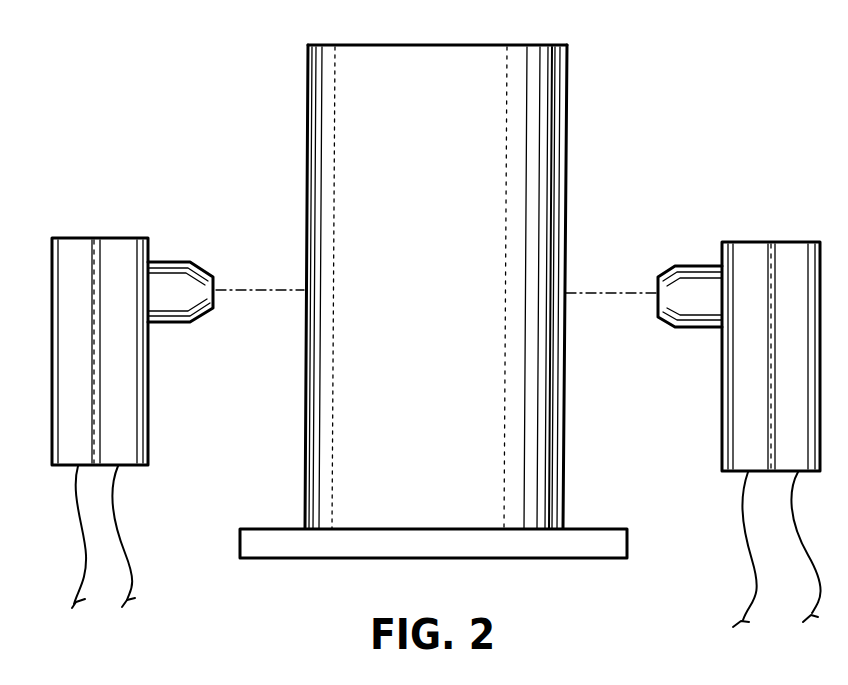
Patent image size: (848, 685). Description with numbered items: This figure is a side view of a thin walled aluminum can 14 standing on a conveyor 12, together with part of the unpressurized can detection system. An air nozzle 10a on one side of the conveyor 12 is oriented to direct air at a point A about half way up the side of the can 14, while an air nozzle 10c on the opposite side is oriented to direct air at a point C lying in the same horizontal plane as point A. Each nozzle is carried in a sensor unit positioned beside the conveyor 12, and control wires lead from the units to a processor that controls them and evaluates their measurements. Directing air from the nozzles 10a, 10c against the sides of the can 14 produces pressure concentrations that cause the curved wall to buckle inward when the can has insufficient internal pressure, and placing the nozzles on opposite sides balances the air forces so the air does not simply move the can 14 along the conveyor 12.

The thin walled aluminum can 14 is at (435, 64).
The conveyor 12 is at (264, 540).
The air nozzle 10a is at (703, 278).
The air nozzle 10c is at (170, 276).
The point C is at (305, 292).
The point A is at (572, 289).